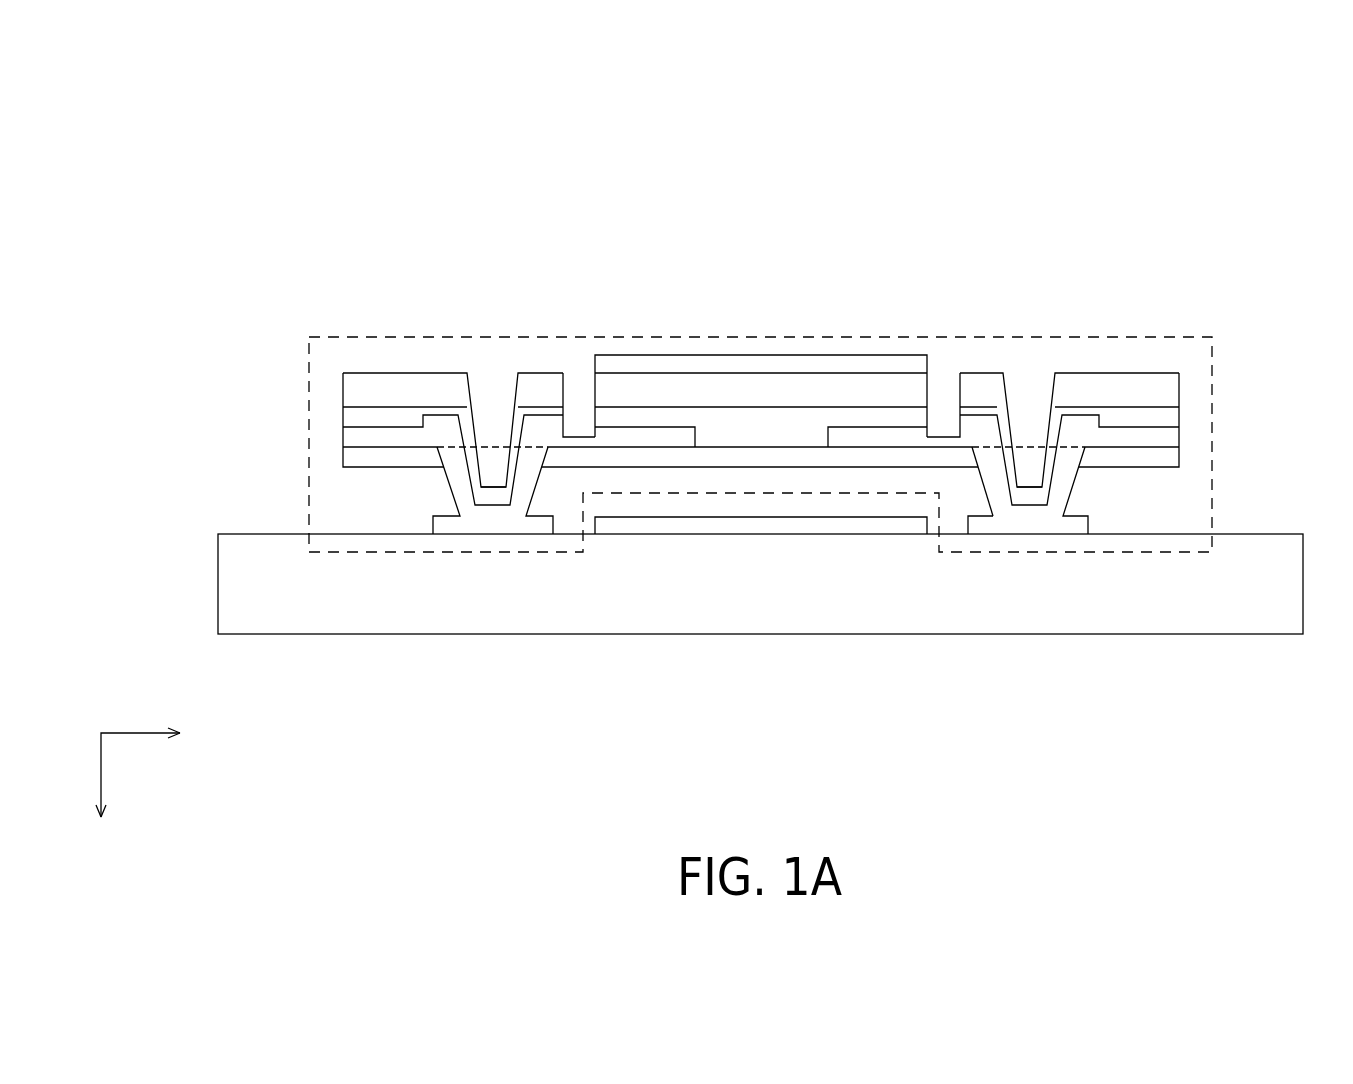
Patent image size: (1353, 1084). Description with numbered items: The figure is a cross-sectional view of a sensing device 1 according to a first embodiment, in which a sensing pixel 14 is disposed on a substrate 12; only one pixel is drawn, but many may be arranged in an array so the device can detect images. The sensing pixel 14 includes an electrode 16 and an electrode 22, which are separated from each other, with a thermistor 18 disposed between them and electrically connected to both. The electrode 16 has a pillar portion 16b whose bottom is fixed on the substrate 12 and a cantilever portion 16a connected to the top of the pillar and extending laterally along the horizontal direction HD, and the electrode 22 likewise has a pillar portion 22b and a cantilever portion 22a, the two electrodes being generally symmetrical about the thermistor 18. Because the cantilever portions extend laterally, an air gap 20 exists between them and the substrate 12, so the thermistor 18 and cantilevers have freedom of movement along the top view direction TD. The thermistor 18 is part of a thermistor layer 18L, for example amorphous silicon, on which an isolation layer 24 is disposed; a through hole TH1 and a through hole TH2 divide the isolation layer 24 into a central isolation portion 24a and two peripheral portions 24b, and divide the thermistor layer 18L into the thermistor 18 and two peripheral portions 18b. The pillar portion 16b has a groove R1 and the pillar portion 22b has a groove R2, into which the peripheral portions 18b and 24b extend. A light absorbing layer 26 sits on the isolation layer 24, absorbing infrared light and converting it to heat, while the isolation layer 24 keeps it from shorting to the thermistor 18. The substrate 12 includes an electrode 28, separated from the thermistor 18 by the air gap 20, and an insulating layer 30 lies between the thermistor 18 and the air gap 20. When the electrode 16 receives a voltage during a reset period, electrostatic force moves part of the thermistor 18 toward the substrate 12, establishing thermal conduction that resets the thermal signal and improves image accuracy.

The sensing device 1 is at (1252, 170).
The substrate 12 is at (1243, 601).
The sensing pixel 14 is at (1212, 397).
The electrode 16 is at (985, 277).
The cantilever portion 16a is at (890, 437).
The pillar portion 16b is at (993, 477).
The thermistor 18 is at (737, 430).
The thermistor layer 18L is at (324, 420).
The peripheral portions 18b is at (383, 418).
The air gap 20 is at (958, 505).
The electrode 22 is at (613, 702).
The cantilever portion 22a is at (612, 437).
The pillar portion 22b is at (523, 482).
The isolation layer 24 is at (324, 396).
The isolation portion 24a is at (643, 393).
The peripheral portions 24b is at (533, 392).
The light absorbing layer 26 is at (807, 365).
The electrode 28 is at (702, 525).
The insulating layer 30 is at (837, 457).
The groove R1 is at (1030, 413).
The groove R2 is at (502, 413).
The through hole TH1 is at (950, 432).
The through hole TH2 is at (582, 378).
The horizontal direction HD is at (162, 769).
The top view direction TD is at (99, 830).